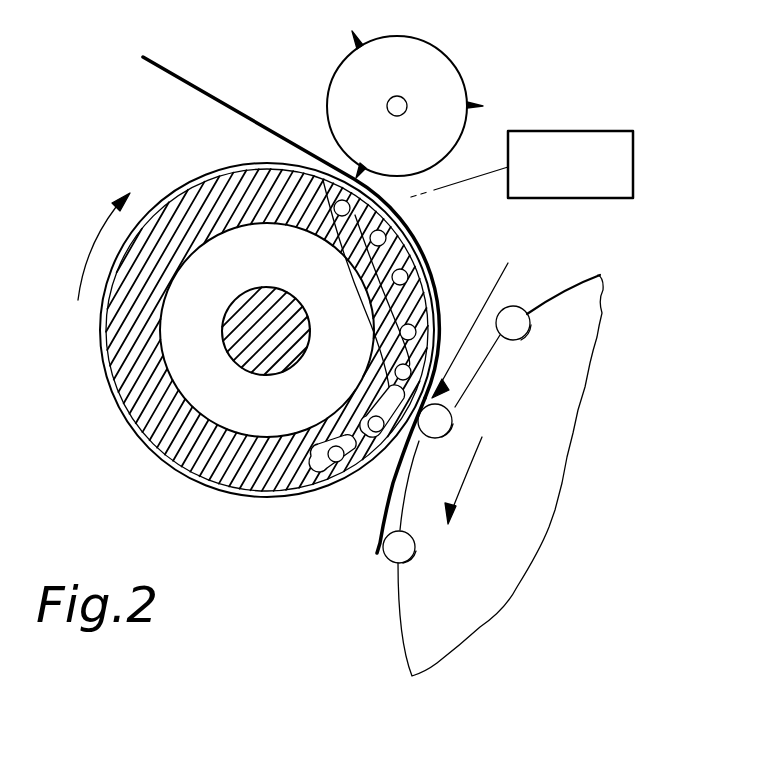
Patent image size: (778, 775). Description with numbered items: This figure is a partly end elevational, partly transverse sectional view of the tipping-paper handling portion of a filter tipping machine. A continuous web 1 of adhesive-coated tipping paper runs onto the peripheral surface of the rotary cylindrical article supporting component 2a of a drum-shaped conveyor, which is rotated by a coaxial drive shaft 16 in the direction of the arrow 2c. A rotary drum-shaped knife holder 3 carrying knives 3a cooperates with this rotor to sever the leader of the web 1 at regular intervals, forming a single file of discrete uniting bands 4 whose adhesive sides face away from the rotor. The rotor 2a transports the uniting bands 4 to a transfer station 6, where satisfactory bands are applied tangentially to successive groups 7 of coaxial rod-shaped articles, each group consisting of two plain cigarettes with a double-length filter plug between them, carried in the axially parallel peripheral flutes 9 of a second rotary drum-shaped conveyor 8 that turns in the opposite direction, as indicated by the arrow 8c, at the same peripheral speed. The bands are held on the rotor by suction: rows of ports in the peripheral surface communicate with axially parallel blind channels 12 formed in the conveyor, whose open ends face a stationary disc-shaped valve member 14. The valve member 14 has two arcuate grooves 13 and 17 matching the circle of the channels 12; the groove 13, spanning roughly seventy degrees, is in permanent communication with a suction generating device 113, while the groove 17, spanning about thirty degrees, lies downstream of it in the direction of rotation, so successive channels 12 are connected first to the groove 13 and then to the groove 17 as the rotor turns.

The web 1 is at (218, 100).
The article supporting component 2a is at (172, 190).
The arrow 2c is at (92, 247).
The knife holder 3 is at (443, 78).
The knives 3a is at (353, 32).
The uniting bands 4 is at (443, 317).
The transfer station 6 is at (473, 327).
The groups of coaxial rod-shaped articles 7 is at (513, 320).
The rotary drum-shaped conveyor 8 is at (515, 512).
The arrow 8c is at (477, 440).
The peripheral flutes 9 is at (520, 343).
The channels 12 is at (320, 165).
The groove 13 is at (397, 252).
The valve member 14 is at (205, 458).
The drive shaft 16 is at (223, 313).
The groove 17 is at (387, 402).
The suction generating device 113 is at (610, 198).